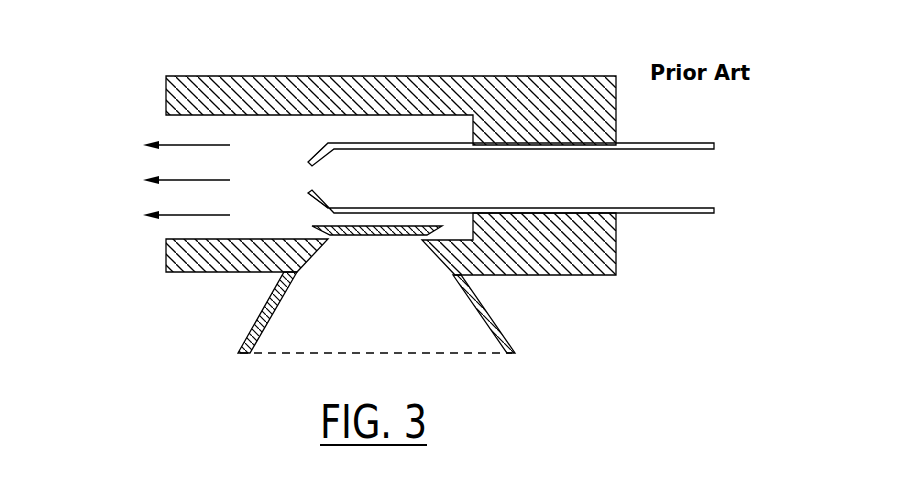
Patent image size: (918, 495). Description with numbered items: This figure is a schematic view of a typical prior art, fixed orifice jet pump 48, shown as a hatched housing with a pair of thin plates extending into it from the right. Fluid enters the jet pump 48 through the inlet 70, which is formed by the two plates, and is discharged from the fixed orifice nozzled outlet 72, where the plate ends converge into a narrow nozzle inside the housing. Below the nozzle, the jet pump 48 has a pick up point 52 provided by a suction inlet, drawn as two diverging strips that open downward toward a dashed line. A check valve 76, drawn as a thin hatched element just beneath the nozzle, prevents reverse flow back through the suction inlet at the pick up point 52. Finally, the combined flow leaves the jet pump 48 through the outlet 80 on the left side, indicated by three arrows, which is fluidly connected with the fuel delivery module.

The fixed orifice jet pump 48 is at (548, 69).
The inlet 70 is at (707, 162).
The fixed orifice nozzled outlet 72 is at (307, 173).
The check valve 76 is at (380, 236).
The outlet 80 is at (168, 122).
The pick up point 52 is at (448, 355).